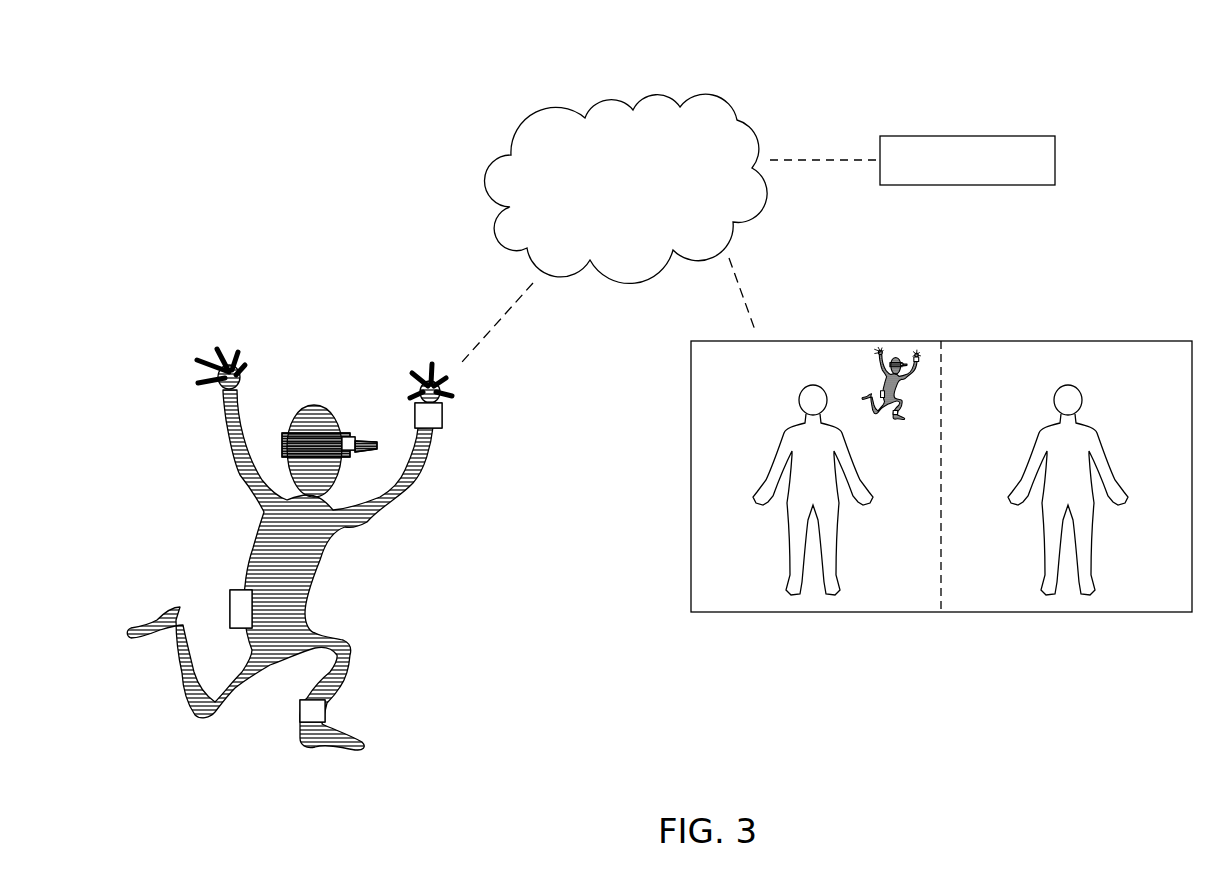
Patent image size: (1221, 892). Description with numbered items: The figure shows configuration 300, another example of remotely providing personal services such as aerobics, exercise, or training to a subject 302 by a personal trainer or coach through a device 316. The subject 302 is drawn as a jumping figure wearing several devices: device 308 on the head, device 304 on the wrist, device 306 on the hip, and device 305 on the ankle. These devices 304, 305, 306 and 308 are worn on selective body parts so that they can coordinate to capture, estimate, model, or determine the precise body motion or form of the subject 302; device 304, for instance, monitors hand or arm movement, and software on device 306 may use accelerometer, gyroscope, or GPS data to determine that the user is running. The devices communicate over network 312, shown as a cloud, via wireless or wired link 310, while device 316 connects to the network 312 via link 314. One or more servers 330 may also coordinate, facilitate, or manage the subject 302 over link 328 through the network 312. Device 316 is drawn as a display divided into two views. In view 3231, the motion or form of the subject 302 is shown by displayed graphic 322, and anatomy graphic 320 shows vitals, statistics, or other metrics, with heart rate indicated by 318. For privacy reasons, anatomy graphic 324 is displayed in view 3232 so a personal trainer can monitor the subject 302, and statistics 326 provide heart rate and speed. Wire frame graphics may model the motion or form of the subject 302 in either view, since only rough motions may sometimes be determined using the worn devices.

The configuration 300 is at (318, 45).
The subject 302 is at (295, 405).
The device 304 is at (443, 415).
The device 305 is at (325, 710).
The device 306 is at (237, 590).
The device 308 is at (340, 422).
The wireless or wired link 310 is at (498, 322).
The network 312 is at (607, 92).
The wireless or wired link 314 is at (751, 310).
The device 316 is at (968, 612).
The heart rate indicator 318 is at (825, 438).
The anatomy graphic 320 is at (787, 500).
The displayed graphic 322 is at (903, 348).
The view 3231 is at (723, 600).
The view 3232 is at (1153, 598).
The anatomy graphic 324 is at (1103, 463).
The statistics 326 is at (1173, 340).
The wired or wireless link 328 is at (825, 160).
The server 330 is at (968, 136).